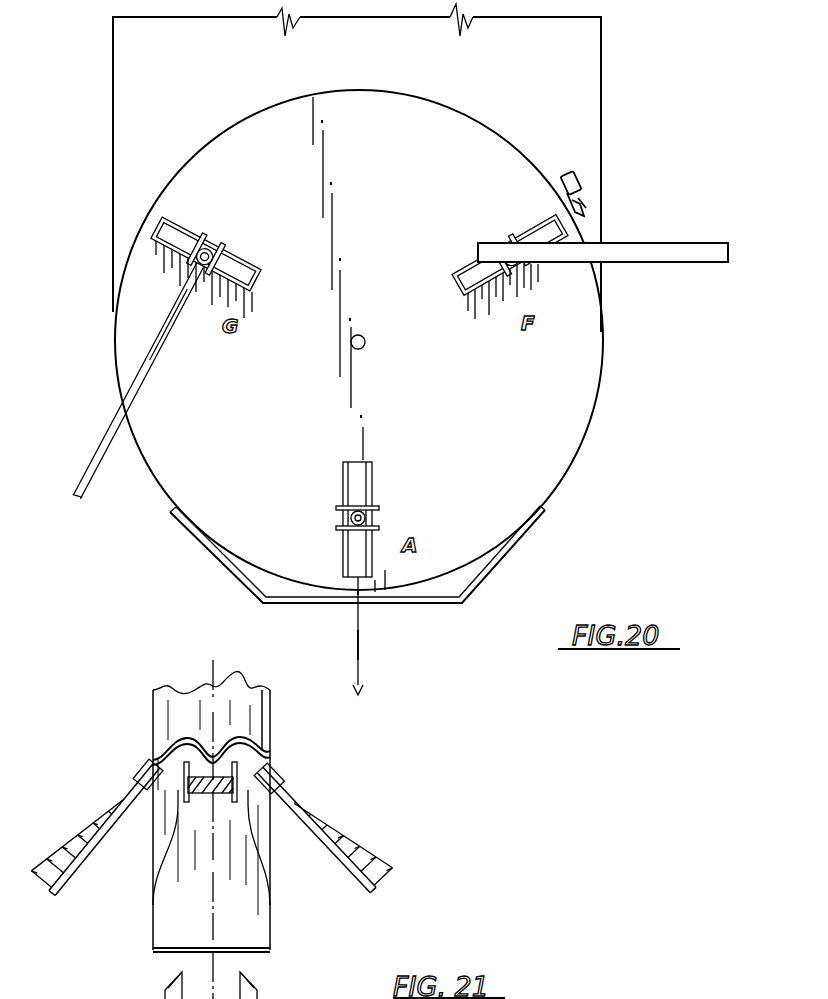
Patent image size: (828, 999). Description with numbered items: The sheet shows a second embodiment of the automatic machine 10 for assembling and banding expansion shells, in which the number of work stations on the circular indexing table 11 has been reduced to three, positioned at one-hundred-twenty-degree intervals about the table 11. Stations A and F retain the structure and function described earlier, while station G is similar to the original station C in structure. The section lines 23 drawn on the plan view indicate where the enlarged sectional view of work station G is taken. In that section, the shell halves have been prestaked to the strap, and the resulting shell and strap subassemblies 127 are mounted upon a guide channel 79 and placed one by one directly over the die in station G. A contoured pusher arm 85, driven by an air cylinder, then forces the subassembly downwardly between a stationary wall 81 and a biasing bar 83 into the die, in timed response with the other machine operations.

In FIG. 20, the automatic machine 10 is at (631, 156).
In FIG. 20, the circular indexing table 11 is at (563, 412).
In FIG. 20, the section lines 23 is at (227, 220).
In FIG. 21, the contoured pusher arm 85 is at (243, 707).
In FIG. 21, the guide channel 79 is at (250, 762).
In FIG. 21, the stationary wall 81 is at (160, 804).
In FIG. 21, the biasing bar 83 is at (258, 896).
In FIG. 21, the shell and strap subassemblies 127 is at (350, 827).